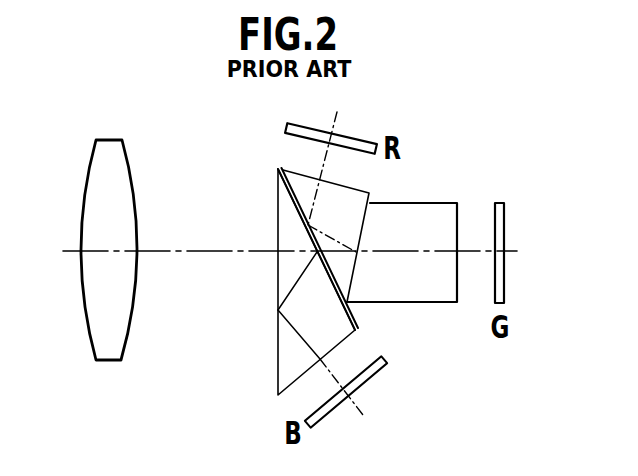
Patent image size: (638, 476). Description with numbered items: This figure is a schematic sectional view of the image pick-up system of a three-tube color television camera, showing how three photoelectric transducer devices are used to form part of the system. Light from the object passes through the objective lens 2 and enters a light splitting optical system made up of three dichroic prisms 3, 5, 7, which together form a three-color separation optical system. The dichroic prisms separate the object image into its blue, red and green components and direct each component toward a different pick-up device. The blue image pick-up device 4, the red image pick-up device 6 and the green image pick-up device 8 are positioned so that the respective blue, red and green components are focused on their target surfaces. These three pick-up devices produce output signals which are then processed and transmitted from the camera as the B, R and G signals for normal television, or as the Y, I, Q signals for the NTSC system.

The objective lens 2 is at (114, 360).
The dichroic prism 3 is at (280, 283).
The blue image pick-up device 4 is at (378, 371).
The dichroic prism 5 is at (370, 193).
The red image pick-up device 6 is at (350, 135).
The dichroic prism 7 is at (436, 302).
The green image pick-up device 8 is at (504, 222).